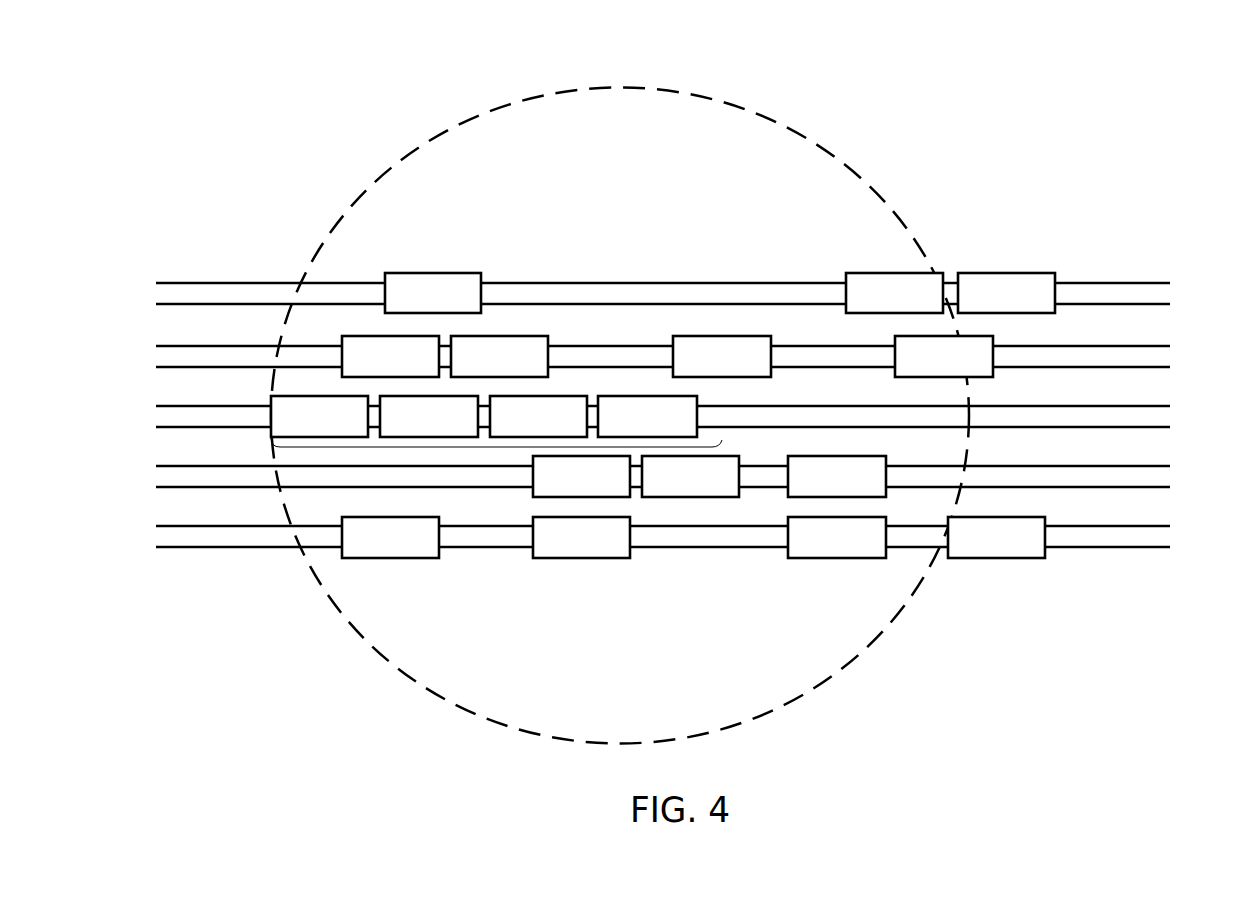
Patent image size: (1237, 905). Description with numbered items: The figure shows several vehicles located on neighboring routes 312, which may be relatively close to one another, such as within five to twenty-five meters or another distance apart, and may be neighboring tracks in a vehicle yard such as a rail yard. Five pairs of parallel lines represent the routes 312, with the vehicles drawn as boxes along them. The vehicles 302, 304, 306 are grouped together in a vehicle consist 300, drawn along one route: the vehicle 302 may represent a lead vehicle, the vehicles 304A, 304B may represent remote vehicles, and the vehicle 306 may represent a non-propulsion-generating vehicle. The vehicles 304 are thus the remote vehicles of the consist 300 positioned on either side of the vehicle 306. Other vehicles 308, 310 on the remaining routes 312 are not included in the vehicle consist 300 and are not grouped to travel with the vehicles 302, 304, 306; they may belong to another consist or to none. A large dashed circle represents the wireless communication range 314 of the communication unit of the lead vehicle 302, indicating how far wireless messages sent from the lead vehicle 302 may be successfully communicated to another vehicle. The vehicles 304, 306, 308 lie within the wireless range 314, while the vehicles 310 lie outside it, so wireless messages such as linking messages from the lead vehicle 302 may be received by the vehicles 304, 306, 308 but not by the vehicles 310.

The vehicle consist 300 is at (497, 447).
The lead vehicle 302 is at (668, 429).
The remote vehicles 304 is at (572, 378).
The remote vehicle 304A is at (510, 429).
The remote vehicle 304B is at (291, 429).
The non-propulsion-generating vehicle 306 is at (409, 429).
The vehicles 308 is at (413, 306).
The vehicles 310 is at (986, 306).
The routes 312 is at (1177, 383).
The wireless communication range 314 is at (745, 108).